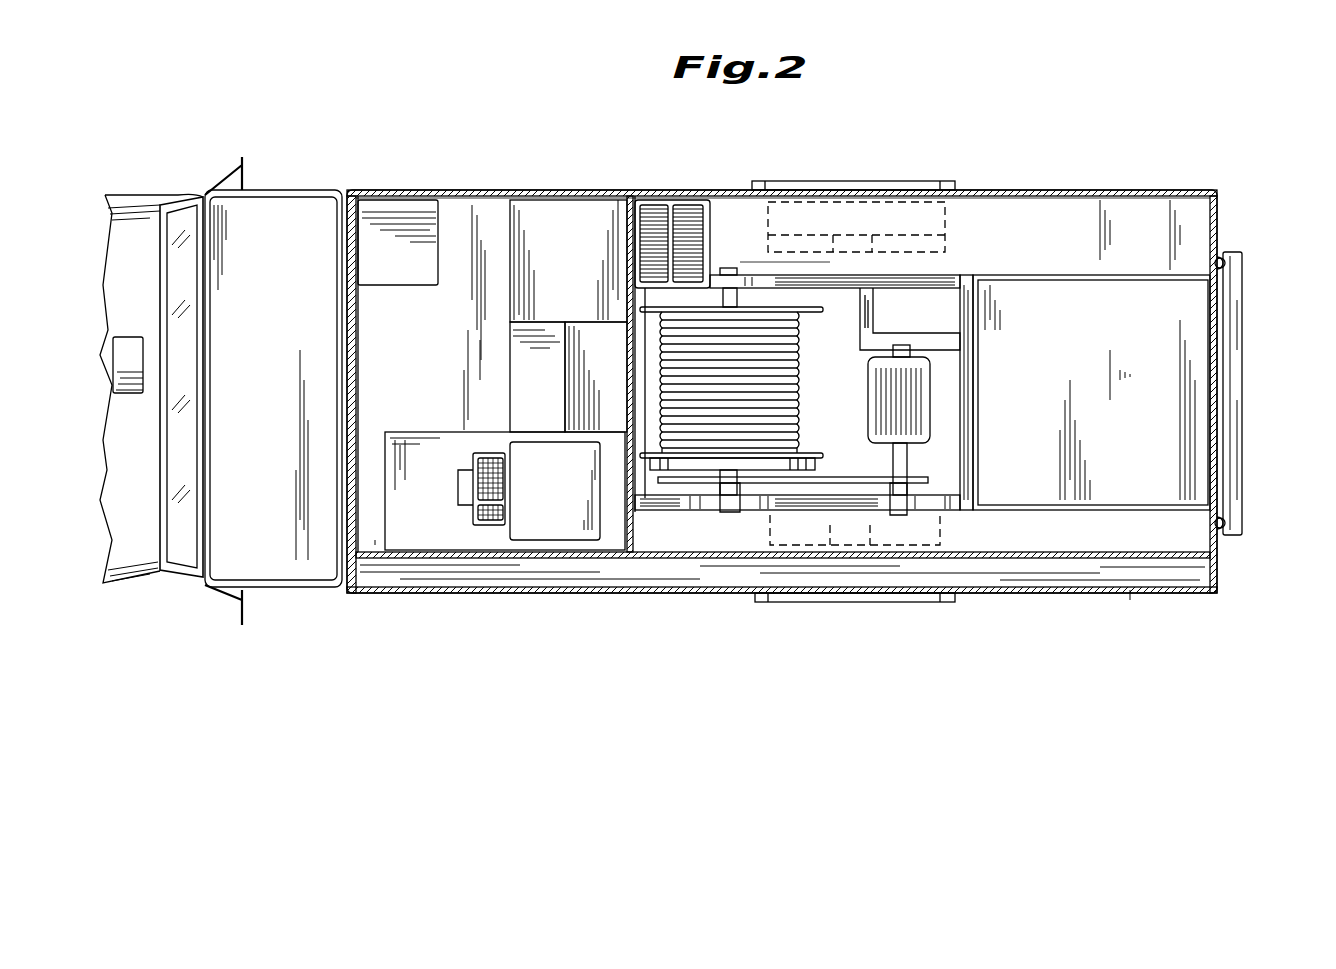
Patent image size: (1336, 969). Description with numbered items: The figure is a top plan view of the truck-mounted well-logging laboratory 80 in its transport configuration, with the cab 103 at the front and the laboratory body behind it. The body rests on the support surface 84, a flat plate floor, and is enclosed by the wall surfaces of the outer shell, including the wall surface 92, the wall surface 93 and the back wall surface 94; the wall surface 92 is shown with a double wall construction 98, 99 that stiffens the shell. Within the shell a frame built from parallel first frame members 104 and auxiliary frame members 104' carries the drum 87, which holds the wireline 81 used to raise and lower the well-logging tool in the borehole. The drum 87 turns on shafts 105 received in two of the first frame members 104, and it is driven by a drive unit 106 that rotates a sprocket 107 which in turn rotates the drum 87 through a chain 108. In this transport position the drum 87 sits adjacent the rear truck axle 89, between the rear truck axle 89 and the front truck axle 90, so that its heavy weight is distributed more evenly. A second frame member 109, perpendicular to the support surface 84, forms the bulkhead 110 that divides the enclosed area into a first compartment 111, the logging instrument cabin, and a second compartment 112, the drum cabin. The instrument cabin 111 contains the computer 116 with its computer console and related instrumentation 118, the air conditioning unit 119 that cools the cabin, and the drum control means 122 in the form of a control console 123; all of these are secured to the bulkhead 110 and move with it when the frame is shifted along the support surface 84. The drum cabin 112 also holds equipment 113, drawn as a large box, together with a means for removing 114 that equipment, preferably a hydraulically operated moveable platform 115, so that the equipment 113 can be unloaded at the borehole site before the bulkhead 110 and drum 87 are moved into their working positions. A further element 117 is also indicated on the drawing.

The well-logging laboratory 80 is at (1208, 164).
The wireline 81 is at (797, 352).
The support surface 84 is at (379, 306).
The drum 87 is at (790, 301).
The rear truck axle 89 is at (887, 217).
The front truck axle 90 is at (114, 172).
The wall surface 92 is at (734, 600).
The wall surface 93 is at (782, 215).
The back wall surface 94 is at (1220, 223).
The double wall construction 98 is at (680, 594).
The double wall construction 99 is at (630, 558).
The cab 103 is at (278, 565).
The first frame member 104 is at (879, 426).
The auxiliary frame member 104' is at (926, 237).
The shaft 105 is at (729, 268).
The drive unit 106 is at (935, 433).
The sprocket 107 is at (905, 482).
The chain 108 is at (877, 483).
The second frame member 109 is at (638, 190).
The bulkhead 110 is at (640, 197).
The first compartment 111 is at (436, 322).
The second compartment 112 is at (1033, 333).
The equipment 113 is at (1197, 398).
The means for removing 114 is at (1246, 282).
The moveable platform 115 is at (1243, 348).
The computer 116 is at (556, 234).
The control panel 117 is at (490, 517).
The computer console and related instrumentation 118 is at (578, 217).
The air conditioning unit 119 is at (650, 231).
The control means 122 is at (524, 347).
The control console 123 is at (557, 333).